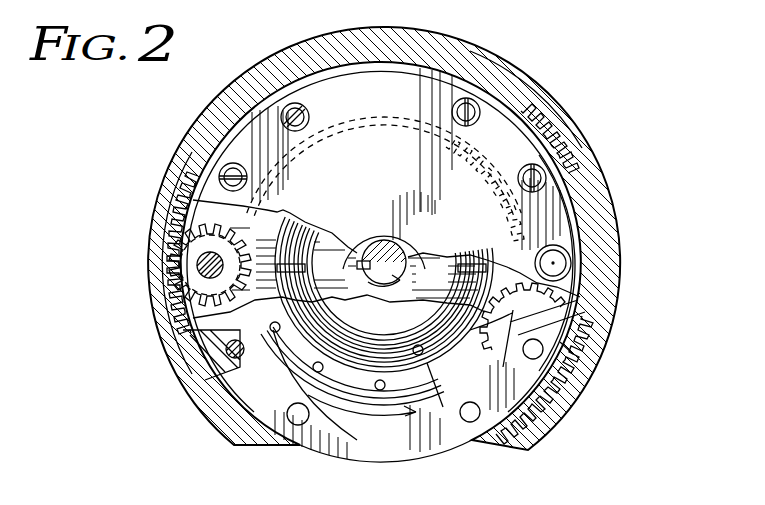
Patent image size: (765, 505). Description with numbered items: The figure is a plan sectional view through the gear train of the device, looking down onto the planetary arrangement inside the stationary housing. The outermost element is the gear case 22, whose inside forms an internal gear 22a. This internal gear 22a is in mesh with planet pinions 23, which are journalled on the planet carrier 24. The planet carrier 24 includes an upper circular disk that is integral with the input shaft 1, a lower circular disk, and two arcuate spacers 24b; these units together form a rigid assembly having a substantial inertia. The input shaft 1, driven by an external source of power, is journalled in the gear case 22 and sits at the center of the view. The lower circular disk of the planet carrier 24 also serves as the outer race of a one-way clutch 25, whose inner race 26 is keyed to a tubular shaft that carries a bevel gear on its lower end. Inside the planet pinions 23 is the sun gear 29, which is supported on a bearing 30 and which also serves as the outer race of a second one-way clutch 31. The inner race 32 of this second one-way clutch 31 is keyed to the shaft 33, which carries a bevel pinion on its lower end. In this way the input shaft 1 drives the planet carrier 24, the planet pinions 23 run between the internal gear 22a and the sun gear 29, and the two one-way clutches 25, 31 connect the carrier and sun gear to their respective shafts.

The input shaft 1 is at (400, 248).
The gear case 22 is at (575, 135).
The internal gear 22a is at (175, 237).
The planet pinions 23 is at (200, 297).
The planet carrier 24 is at (400, 187).
The arcuate spacers 24b is at (560, 210).
The one-way clutch 25 is at (443, 407).
The inner race 26 is at (388, 326).
The sun gear 29 is at (530, 384).
The bearing 30 is at (330, 362).
The one-way clutch 31 is at (573, 354).
The inner race 32 is at (384, 294).
The shaft 33 is at (396, 268).